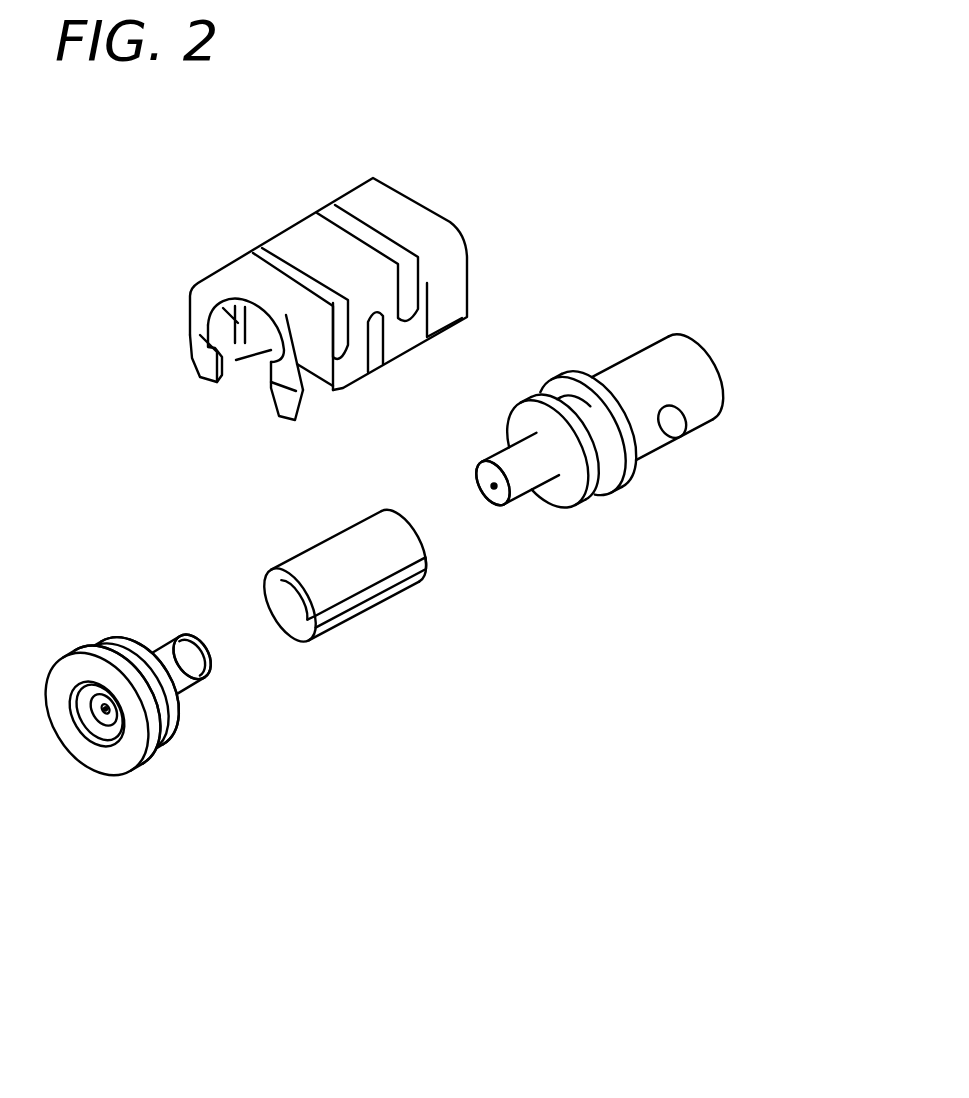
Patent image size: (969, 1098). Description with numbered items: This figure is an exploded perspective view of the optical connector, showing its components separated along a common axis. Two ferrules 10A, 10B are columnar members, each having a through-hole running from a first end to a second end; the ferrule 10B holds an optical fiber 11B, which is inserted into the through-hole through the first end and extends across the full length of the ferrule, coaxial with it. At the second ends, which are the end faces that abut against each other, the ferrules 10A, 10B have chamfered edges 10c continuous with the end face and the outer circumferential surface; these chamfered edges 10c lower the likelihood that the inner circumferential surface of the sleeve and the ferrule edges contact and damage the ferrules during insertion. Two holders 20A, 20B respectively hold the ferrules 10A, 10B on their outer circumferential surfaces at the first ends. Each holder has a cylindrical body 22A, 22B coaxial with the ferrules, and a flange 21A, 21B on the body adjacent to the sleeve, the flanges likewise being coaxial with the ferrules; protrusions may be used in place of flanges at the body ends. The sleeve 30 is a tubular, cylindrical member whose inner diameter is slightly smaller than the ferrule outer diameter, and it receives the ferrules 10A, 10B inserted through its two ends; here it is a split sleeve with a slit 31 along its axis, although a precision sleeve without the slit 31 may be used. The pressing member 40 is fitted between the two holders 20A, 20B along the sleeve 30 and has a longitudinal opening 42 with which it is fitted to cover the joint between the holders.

The pressing member 40 is at (297, 250).
The longitudinal opening 42 is at (252, 373).
The holder 20A is at (150, 742).
The holder 20B is at (575, 403).
The flange 21A is at (150, 663).
The flange 21B is at (595, 435).
The body 22A is at (172, 732).
The body 22B is at (612, 460).
The ferrule 10A is at (192, 680).
The ferrule 10B is at (535, 475).
The chamfered edge 10c is at (490, 466).
The optical fiber 11B is at (494, 490).
The sleeve 30 is at (318, 567).
The slit 31 is at (370, 592).